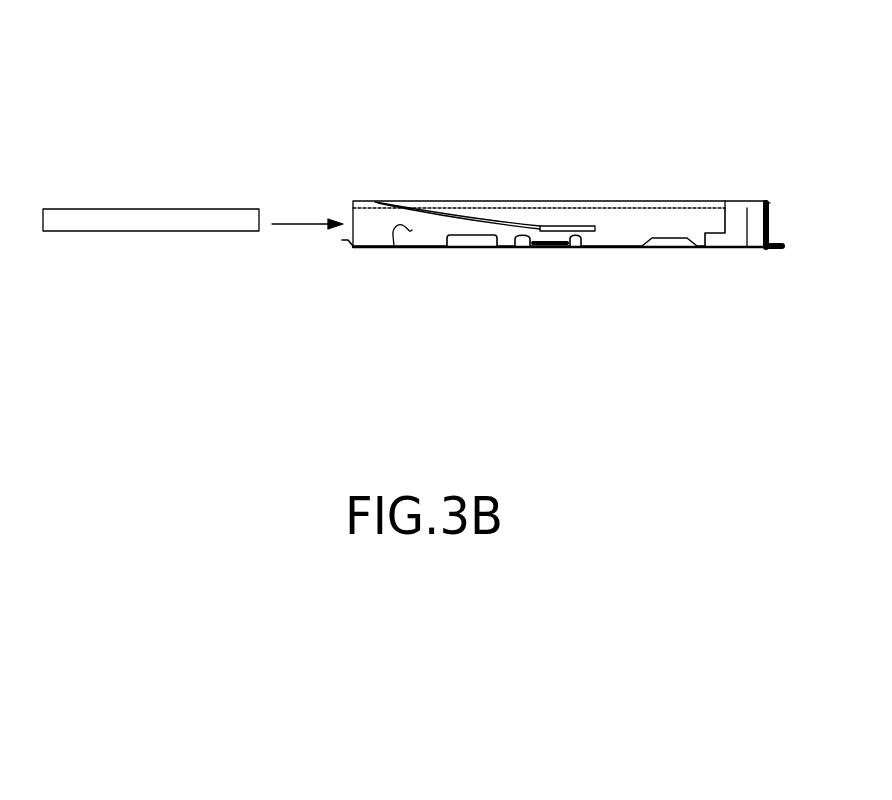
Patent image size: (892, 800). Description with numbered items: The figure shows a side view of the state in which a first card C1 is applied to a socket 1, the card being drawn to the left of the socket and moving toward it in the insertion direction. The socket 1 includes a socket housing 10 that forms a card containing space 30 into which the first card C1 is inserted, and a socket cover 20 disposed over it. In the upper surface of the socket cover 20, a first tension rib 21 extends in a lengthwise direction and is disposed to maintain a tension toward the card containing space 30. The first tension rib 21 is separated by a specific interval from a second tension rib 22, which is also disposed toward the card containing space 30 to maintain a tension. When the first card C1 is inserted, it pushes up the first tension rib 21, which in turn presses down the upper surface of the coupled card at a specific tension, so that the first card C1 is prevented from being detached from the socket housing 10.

The card connector 1 is at (663, 100).
The socket housing 10 is at (757, 217).
The socket cover 20 is at (495, 177).
The first tension rib 21 is at (441, 215).
The second tension rib 22 is at (562, 230).
The card containing space 30 is at (395, 248).
The first card C1 is at (160, 218).